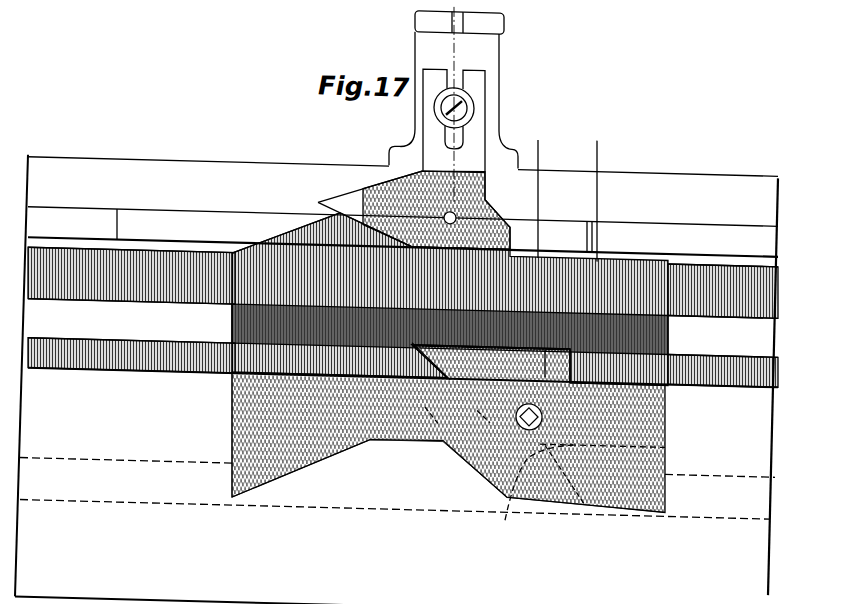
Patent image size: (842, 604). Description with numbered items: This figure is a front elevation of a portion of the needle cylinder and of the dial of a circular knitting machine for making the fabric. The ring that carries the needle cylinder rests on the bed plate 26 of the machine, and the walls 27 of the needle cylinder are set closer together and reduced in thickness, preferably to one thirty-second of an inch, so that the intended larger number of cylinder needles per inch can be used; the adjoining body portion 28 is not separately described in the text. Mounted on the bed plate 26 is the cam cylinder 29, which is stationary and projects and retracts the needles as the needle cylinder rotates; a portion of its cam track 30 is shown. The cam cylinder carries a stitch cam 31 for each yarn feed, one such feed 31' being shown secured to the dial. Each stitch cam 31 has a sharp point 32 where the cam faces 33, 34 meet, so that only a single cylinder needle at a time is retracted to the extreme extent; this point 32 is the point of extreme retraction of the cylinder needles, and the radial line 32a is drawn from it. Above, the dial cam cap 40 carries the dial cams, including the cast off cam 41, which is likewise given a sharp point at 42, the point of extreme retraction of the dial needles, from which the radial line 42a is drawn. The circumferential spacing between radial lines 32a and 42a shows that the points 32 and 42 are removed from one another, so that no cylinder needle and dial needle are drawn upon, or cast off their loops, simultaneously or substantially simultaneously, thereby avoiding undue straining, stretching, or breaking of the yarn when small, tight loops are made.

The bed plate 26 is at (162, 509).
The walls of the needle cylinder 27 is at (693, 259).
The slide block 28 is at (300, 218).
The cam cylinder 29 is at (388, 483).
The cam track 30 is at (660, 445).
The stitch cam 31 is at (460, 424).
The yarn feed 31' is at (419, 126).
The sharp point 32 is at (505, 508).
The radial line 32a is at (548, 135).
The cam face 33 is at (488, 409).
The cam face 34 is at (590, 495).
The dial cam cap 40 is at (238, 162).
The cast off cam 41 is at (70, 214).
The sharp point 42 is at (567, 215).
The radial line 42a is at (600, 144).